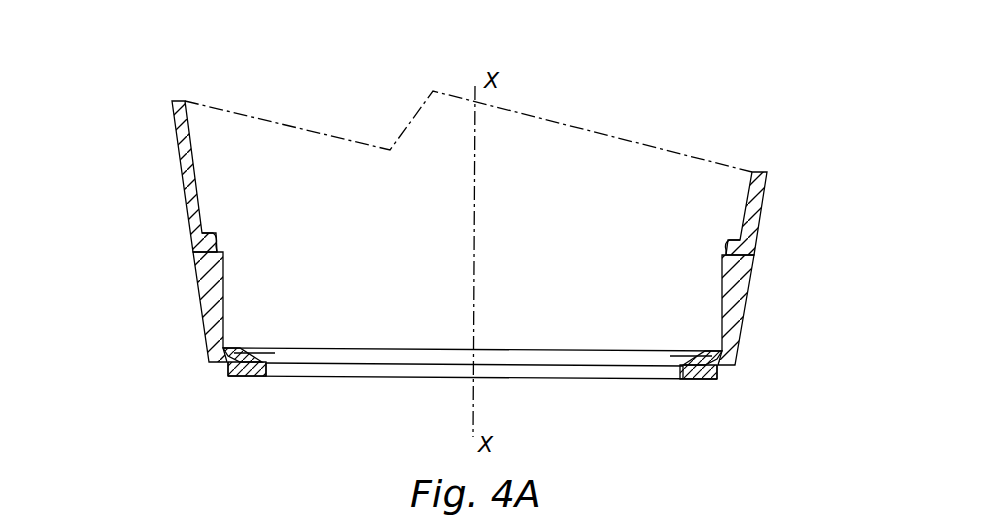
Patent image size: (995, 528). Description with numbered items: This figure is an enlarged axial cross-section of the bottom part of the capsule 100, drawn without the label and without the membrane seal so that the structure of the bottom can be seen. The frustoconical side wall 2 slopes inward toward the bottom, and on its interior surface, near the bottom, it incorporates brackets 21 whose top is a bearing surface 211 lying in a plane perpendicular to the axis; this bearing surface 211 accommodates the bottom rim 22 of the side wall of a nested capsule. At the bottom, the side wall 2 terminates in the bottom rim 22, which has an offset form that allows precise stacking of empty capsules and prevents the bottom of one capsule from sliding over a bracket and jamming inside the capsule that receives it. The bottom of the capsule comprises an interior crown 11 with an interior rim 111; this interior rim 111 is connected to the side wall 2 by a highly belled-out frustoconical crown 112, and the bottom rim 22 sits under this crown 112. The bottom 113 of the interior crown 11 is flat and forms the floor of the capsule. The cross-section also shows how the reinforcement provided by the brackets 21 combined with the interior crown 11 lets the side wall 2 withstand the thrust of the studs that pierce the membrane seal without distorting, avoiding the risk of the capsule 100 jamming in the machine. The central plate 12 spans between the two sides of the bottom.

The capsule 100 is at (148, 60).
The frustoconical side wall 2 is at (175, 152).
The bracket 21 is at (200, 283).
The bearing surface 211 is at (205, 236).
The bottom rim 22 is at (216, 369).
The interior crown 11 is at (233, 348).
The interior rim 111 is at (277, 378).
The frustoconical crown 112 is at (252, 360).
The bottom of the crown 113 is at (237, 378).
The bottom plate 12 is at (505, 372).